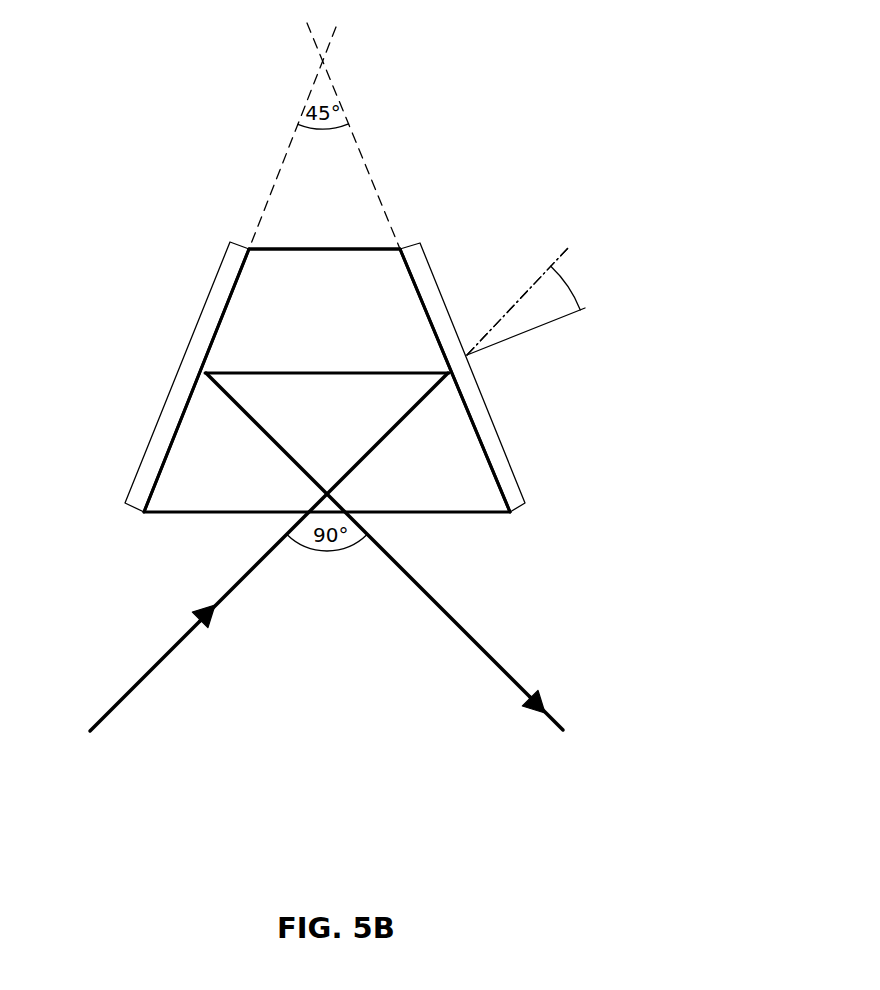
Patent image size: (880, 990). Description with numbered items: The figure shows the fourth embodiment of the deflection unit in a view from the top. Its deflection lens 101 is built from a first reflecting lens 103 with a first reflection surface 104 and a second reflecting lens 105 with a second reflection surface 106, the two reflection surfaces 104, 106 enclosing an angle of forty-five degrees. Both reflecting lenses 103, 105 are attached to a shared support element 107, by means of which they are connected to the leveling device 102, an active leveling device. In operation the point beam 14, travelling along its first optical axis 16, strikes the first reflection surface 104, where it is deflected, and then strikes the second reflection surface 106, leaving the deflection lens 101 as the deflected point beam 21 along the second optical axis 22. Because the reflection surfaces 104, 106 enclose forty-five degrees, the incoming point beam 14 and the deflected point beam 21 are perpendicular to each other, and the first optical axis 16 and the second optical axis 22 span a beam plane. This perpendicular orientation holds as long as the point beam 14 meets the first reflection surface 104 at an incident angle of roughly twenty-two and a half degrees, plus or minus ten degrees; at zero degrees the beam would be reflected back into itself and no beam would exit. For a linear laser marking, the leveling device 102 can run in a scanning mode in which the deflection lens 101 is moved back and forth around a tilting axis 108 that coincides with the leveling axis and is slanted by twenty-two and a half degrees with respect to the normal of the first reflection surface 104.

The point beam 14 is at (128, 692).
The optical axis of the point beam 16 is at (180, 635).
The deflected point beam 21 is at (460, 627).
The optical axis of the deflected point beam 22 is at (518, 680).
The deflection lens 101 is at (328, 636).
The leveling device 102 is at (579, 230).
The first reflecting lens 103 is at (512, 478).
The first reflection surface 104 is at (411, 287).
The second reflecting lens 105 is at (143, 483).
The second reflection surface 106 is at (237, 288).
The support element 107 is at (325, 277).
The tilting axis 108 is at (527, 293).